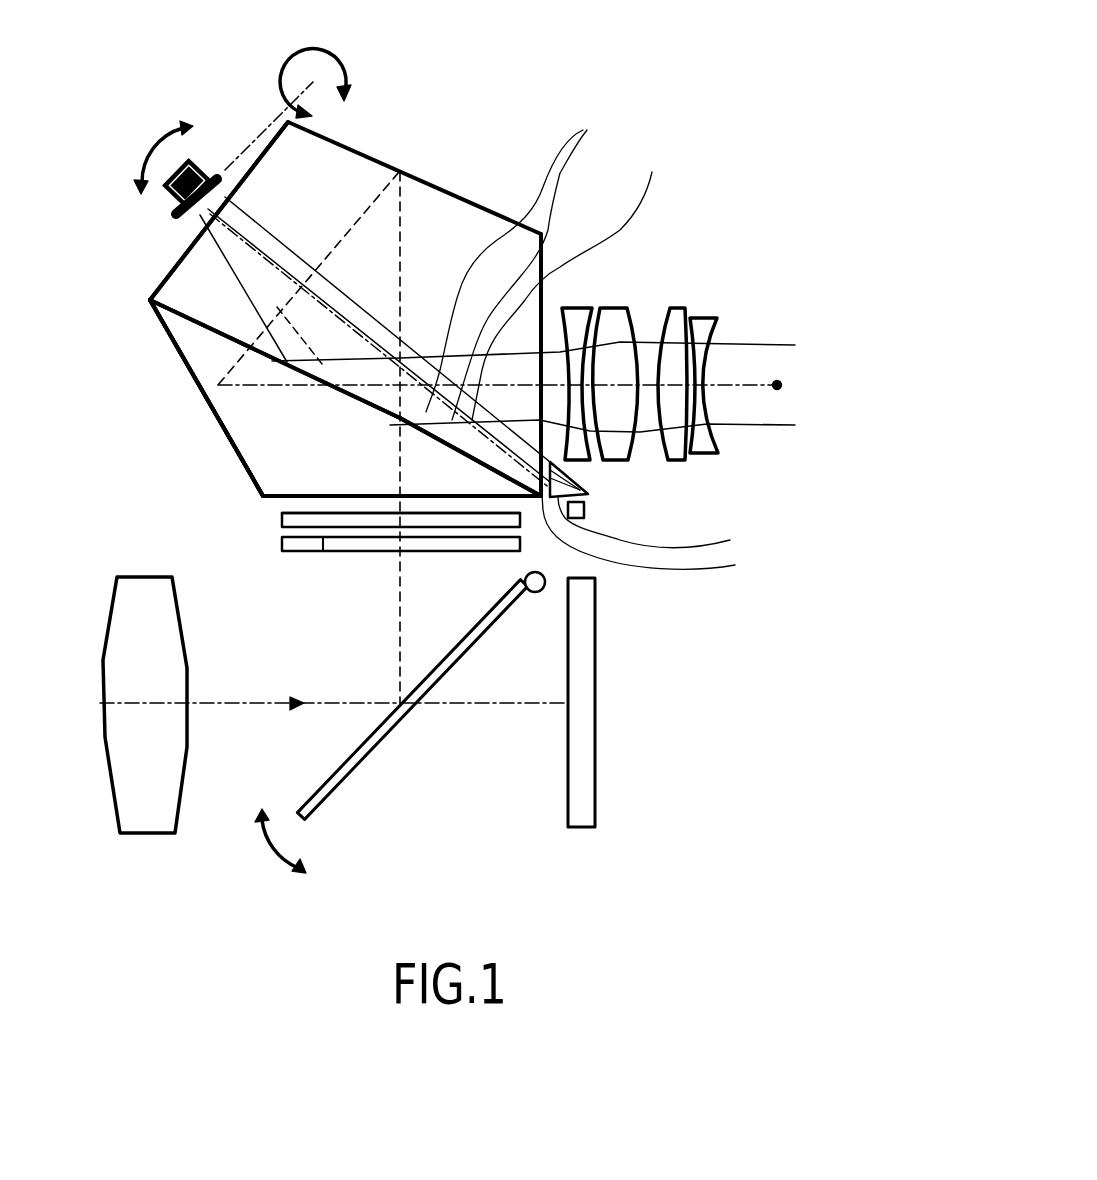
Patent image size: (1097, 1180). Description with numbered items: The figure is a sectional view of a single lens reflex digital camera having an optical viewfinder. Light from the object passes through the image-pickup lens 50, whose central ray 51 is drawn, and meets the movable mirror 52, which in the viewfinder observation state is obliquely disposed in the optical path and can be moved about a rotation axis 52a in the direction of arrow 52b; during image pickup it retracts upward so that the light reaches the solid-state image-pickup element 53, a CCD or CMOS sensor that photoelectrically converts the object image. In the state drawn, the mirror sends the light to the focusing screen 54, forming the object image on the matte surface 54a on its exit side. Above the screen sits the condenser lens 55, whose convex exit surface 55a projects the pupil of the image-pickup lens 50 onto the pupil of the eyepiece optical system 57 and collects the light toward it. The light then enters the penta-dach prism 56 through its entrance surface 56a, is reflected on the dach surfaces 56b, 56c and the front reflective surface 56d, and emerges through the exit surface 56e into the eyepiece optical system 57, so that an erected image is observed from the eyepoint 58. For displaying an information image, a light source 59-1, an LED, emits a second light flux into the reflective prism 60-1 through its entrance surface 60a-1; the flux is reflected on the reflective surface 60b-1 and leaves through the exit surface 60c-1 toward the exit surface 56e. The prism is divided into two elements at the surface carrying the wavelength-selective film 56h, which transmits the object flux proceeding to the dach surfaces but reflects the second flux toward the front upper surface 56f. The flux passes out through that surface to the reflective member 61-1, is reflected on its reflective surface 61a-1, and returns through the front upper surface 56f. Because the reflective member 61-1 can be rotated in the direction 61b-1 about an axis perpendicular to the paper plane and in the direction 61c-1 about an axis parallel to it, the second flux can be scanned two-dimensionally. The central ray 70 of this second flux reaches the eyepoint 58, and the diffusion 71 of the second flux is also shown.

The image-pickup lens 50 is at (142, 593).
The central ray 51 is at (400, 640).
The movable mirror 52 is at (358, 765).
The rotation axis 52a is at (541, 572).
The arrow 52b is at (263, 848).
The solid-state image-pickup element 53 is at (592, 627).
The focusing screen 54 is at (282, 545).
The matte surface 54a is at (322, 552).
The condenser lens 55 is at (282, 518).
The exit surface 55a is at (360, 513).
The penta-dach prism 56 is at (503, 218).
The entrance surface 56a is at (363, 503).
The dach surface 56b is at (437, 213).
The dach surface 56c is at (345, 398).
The front reflective surface 56d is at (185, 343).
The exit surface 56e is at (543, 259).
The front upper surface 56f is at (165, 275).
The wavelength-selective film 56h is at (218, 330).
The eyepiece optical system 57 is at (722, 296).
The eyepoint 58 is at (777, 380).
The light source 59-1 is at (585, 515).
The reflective prism 60-1 is at (712, 521).
The entrance surface 60a-1 is at (681, 526).
The reflective surface 60b-1 is at (578, 487).
The exit surface 60c-1 is at (715, 478).
The reflective member 61-1 is at (167, 190).
The reflective surface 61a-1 is at (188, 225).
The direction 61b-1 is at (135, 156).
The direction 61c-1 is at (288, 89).
The central ray 70 is at (572, 281).
The diffusion 71 is at (518, 268).